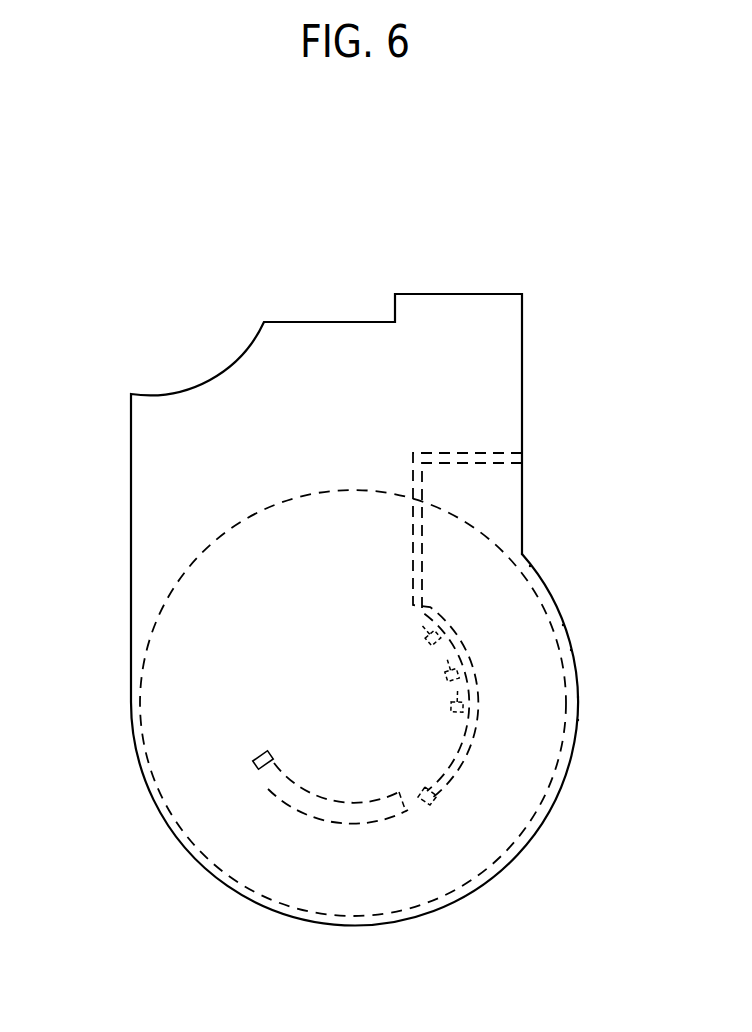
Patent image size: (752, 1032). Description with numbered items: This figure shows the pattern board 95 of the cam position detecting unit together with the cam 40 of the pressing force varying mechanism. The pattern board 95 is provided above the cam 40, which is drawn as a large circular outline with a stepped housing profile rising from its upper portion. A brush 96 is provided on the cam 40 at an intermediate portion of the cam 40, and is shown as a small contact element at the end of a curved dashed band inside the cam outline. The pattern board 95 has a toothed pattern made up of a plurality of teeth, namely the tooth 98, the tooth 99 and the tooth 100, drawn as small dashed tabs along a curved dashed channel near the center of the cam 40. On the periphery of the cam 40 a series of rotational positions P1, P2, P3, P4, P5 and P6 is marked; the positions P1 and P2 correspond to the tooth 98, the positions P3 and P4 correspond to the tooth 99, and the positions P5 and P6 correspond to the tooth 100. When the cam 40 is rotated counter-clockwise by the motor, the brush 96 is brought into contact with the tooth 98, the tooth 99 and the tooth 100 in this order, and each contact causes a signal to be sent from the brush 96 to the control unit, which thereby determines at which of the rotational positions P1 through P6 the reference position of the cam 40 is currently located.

The pattern board 95 is at (126, 493).
The cam 40 is at (352, 915).
The brush 96 is at (264, 770).
The tooth 98 is at (454, 717).
The tooth 99 is at (446, 678).
The tooth 100 is at (426, 634).
The rotational position P1 is at (592, 720).
The rotational position P2 is at (592, 697).
The rotational position P3 is at (583, 647).
The rotational position P4 is at (575, 623).
The rotational position P5 is at (545, 572).
The rotational position P6 is at (532, 552).